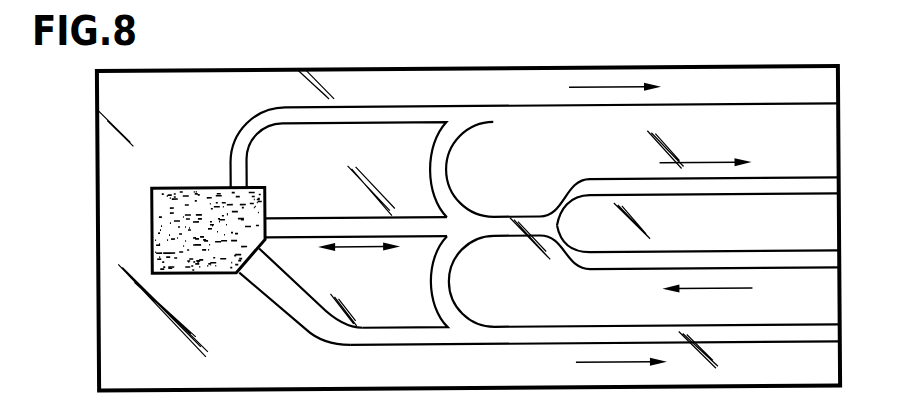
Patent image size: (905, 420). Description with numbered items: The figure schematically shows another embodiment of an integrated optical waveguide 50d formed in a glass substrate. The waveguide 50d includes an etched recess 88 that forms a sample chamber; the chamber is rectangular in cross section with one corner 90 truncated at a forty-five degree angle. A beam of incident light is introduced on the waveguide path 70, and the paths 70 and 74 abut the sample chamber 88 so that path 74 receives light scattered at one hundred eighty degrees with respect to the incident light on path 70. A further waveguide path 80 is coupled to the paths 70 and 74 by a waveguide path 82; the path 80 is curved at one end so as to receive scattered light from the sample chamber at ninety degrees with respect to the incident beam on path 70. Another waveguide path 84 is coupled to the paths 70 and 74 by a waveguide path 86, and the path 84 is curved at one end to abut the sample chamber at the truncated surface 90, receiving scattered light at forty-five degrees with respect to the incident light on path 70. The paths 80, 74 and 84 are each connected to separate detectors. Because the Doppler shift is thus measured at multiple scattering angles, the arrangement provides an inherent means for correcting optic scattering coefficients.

The integrated optical waveguide 50d is at (396, 68).
The waveguide path 80 is at (750, 104).
The waveguide path 82 is at (449, 186).
The waveguide path 86 is at (450, 294).
The waveguide path 74 is at (812, 178).
The waveguide path 70 is at (813, 251).
The waveguide path 84 is at (813, 325).
The etched recess 88 is at (185, 186).
The corner 90 is at (244, 270).